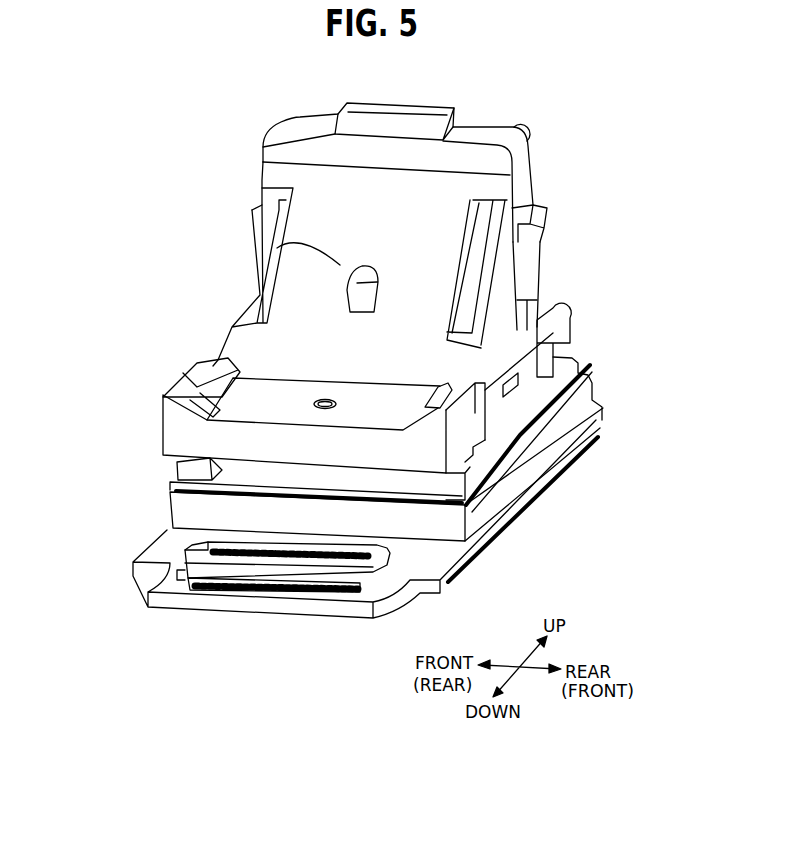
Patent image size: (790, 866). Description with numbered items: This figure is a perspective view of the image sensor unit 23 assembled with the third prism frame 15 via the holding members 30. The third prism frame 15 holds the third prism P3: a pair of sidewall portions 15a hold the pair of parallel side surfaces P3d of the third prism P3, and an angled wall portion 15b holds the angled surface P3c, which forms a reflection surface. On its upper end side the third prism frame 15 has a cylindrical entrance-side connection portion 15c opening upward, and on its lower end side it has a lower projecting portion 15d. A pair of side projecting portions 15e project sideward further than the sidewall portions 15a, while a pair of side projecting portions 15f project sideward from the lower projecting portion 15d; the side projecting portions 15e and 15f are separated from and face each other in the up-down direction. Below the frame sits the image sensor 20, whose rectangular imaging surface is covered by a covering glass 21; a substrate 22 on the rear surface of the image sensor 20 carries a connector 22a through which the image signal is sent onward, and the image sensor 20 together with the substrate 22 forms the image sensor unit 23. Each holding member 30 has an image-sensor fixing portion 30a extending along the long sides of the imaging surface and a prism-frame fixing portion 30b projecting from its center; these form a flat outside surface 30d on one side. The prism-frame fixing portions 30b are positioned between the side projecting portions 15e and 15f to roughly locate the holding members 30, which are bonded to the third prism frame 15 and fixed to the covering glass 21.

The third prism frame 15 is at (492, 119).
The sidewall portions 15a is at (251, 313).
The angled wall portion 15b is at (300, 239).
The entrance-side connection portion 15c is at (524, 170).
The lower projecting portion 15d is at (183, 437).
The side projecting portions 15e is at (547, 350).
The side projecting portions 15f is at (462, 412).
The image sensor 20 is at (587, 390).
The covering glass 21 is at (290, 480).
The substrate 22 is at (173, 603).
The connector 22a is at (322, 598).
The image sensor unit 23 is at (505, 542).
The holding members 30 is at (513, 433).
The image-sensor fixing portion 30a is at (187, 473).
The prism-frame fixing portion 30b is at (220, 355).
The outside surface 30d is at (527, 392).
The third prism P3 is at (497, 269).
The angled surface P3c is at (480, 247).
The side surfaces P3d is at (497, 254).